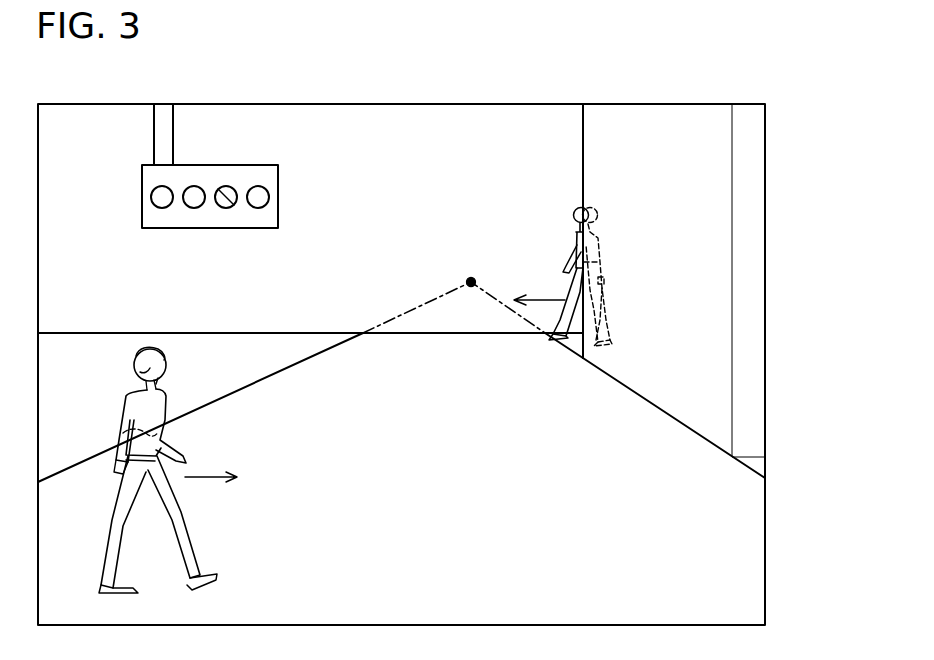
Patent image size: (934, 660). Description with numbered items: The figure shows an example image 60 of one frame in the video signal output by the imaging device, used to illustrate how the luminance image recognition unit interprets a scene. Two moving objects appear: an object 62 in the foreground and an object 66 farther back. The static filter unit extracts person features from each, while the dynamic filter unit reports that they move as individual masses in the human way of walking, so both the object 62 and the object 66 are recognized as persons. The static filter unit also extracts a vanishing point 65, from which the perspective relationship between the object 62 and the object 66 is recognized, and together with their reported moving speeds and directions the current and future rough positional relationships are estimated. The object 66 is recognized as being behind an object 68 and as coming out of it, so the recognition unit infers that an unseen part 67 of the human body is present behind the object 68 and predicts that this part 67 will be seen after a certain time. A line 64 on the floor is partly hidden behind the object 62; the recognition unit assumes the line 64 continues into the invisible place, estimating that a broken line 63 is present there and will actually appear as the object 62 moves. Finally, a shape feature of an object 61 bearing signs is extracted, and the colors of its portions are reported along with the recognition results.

The image 60 is at (383, 104).
The object 61 is at (280, 197).
The object 62 is at (135, 352).
The broken line 63 is at (123, 433).
The line 64 is at (80, 468).
The vanishing point 65 is at (471, 277).
The object 66 is at (578, 240).
The unseen part of a human body 67 is at (600, 262).
The object 68 is at (676, 132).